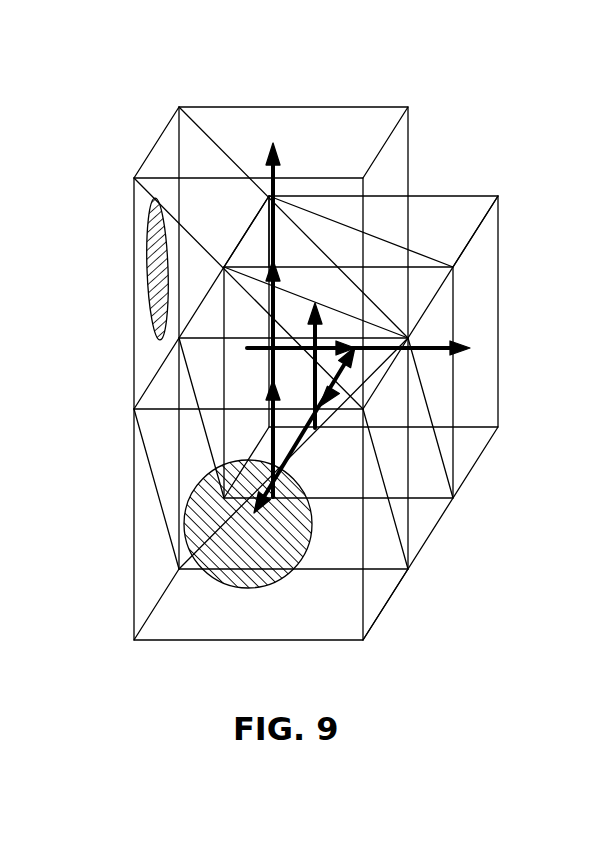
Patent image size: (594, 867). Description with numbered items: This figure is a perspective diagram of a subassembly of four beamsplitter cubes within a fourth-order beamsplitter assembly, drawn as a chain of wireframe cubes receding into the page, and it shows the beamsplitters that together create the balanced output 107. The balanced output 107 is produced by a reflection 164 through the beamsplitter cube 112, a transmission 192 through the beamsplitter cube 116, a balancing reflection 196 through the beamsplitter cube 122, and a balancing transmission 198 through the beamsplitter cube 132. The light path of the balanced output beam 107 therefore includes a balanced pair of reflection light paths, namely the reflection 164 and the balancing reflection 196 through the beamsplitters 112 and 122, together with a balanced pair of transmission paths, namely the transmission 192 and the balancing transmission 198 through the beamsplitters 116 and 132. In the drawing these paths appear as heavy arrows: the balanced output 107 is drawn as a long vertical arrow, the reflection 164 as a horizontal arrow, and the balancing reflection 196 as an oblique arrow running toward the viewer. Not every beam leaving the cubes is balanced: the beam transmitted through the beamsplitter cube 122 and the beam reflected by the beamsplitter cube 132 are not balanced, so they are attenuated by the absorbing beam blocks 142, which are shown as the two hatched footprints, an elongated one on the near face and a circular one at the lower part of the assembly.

The balanced output 107 is at (275, 142).
The beamsplitter cube 112 is at (498, 237).
The beamsplitter cube 116 is at (437, 528).
The beamsplitter cube 122 is at (387, 601).
The beamsplitter cube 132 is at (134, 367).
The absorbing beam block 142 is at (147, 286).
The reflection 164 is at (345, 382).
The transmission 192 is at (318, 432).
The balancing reflection 196 is at (283, 444).
The balancing transmission 198 is at (273, 227).